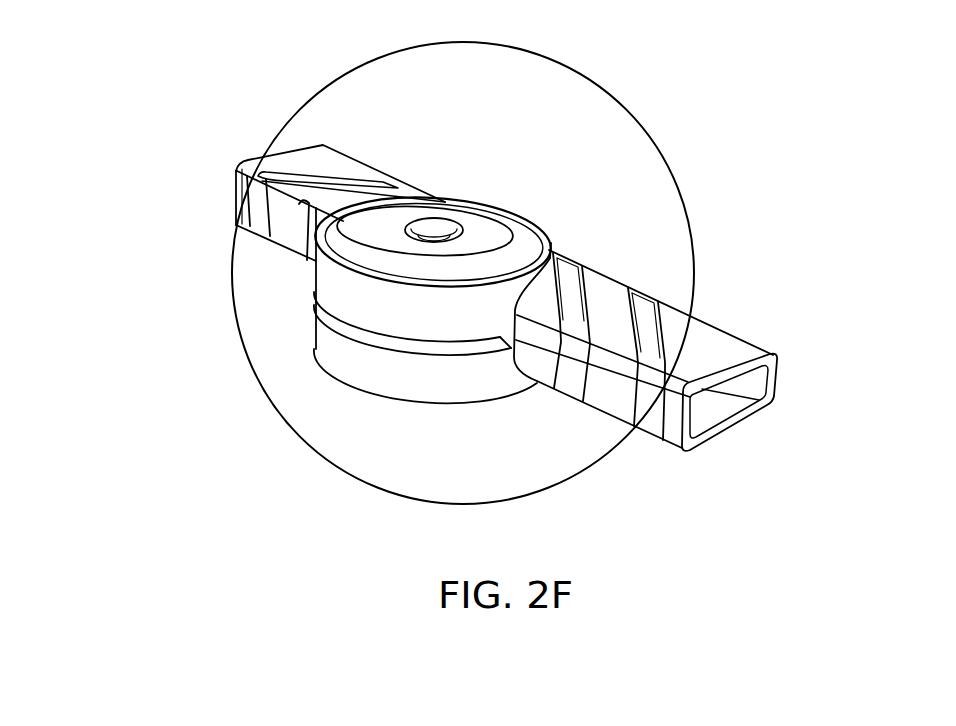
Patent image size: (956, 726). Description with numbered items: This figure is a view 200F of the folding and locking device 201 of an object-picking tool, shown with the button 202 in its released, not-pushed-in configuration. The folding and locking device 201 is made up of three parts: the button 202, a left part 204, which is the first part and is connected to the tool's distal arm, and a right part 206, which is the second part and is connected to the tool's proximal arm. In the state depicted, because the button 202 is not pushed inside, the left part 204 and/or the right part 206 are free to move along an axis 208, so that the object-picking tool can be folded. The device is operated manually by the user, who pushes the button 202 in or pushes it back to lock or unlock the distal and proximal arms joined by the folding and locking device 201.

The view 200F is at (213, 57).
The folding and locking device 201 is at (606, 297).
The button 202 is at (475, 235).
The left part 204 is at (353, 190).
The right part 206 is at (727, 373).
The axis 208 is at (637, 120).